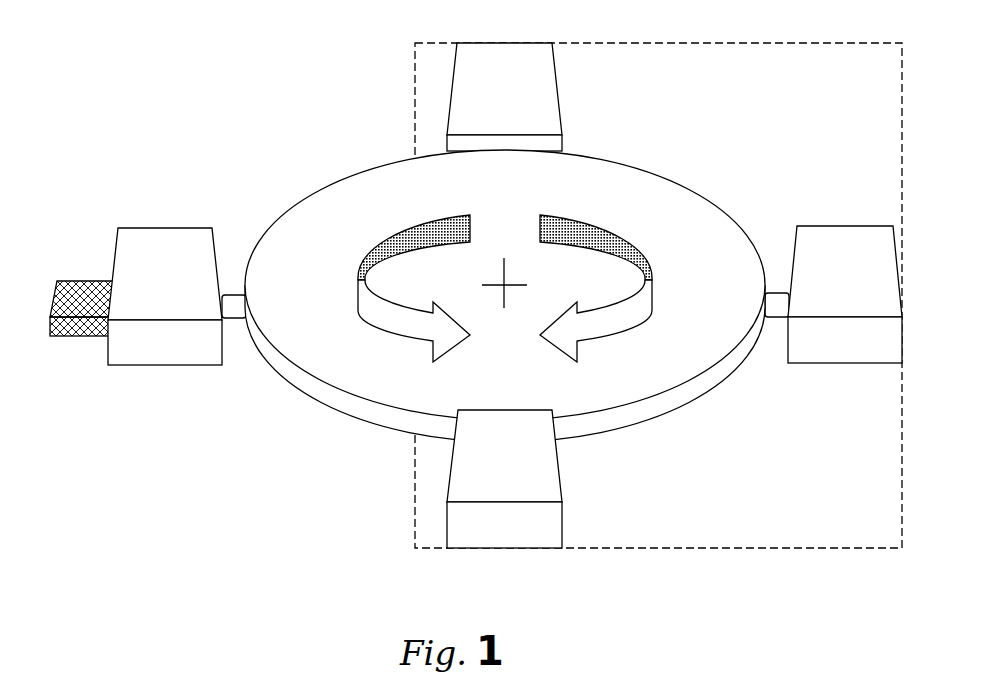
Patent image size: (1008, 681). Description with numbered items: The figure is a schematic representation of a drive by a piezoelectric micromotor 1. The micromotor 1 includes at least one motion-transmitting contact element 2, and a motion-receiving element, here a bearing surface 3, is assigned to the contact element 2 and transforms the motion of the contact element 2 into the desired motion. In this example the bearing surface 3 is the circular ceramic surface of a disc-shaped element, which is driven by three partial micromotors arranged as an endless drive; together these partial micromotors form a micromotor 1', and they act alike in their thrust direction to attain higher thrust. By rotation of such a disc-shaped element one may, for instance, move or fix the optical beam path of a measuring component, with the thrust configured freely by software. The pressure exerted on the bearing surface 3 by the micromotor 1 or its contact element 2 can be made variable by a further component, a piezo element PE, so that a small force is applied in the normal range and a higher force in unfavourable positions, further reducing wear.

The piezoelectric micromotor 1 is at (138, 319).
The micromotor 1' is at (608, 295).
The contact element 2 is at (270, 236).
The bearing surface 3 is at (505, 325).
The piezo element PE is at (118, 251).